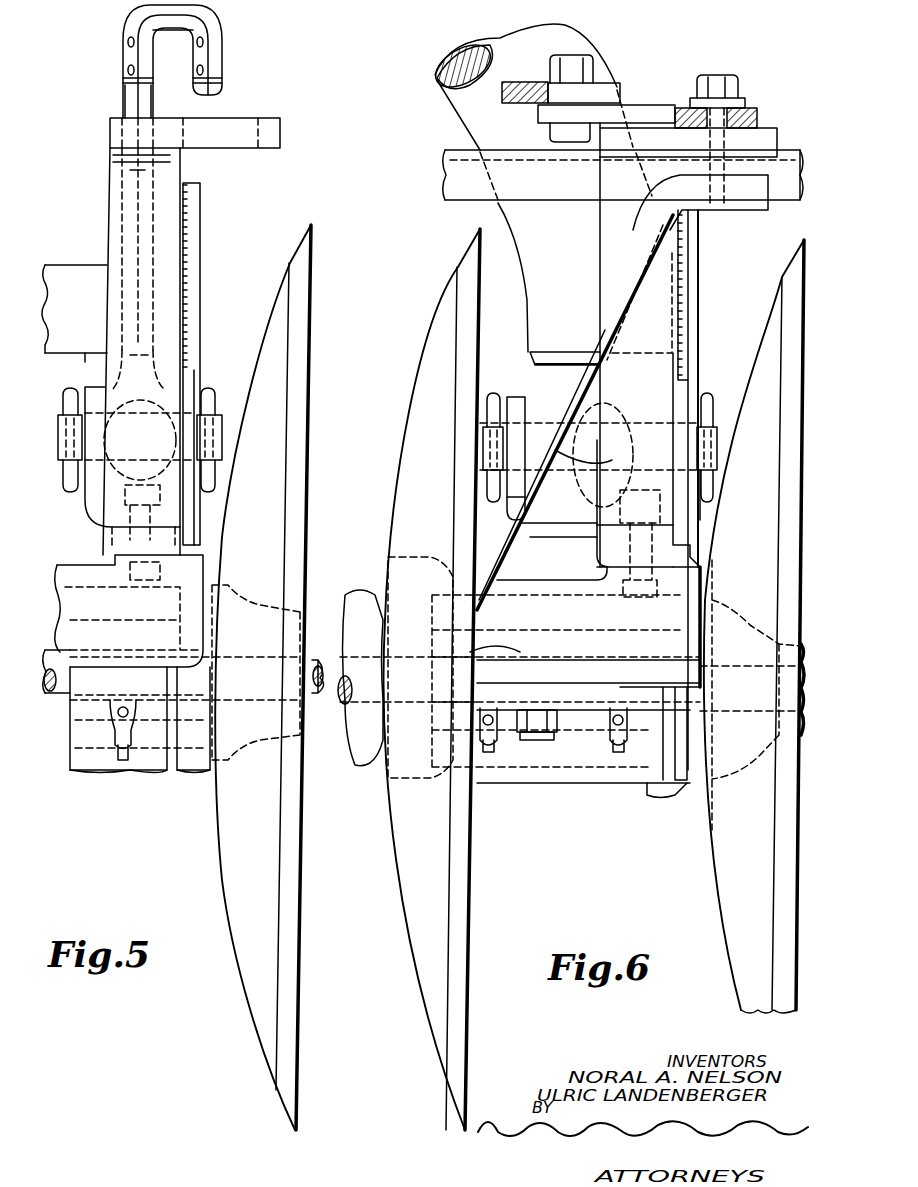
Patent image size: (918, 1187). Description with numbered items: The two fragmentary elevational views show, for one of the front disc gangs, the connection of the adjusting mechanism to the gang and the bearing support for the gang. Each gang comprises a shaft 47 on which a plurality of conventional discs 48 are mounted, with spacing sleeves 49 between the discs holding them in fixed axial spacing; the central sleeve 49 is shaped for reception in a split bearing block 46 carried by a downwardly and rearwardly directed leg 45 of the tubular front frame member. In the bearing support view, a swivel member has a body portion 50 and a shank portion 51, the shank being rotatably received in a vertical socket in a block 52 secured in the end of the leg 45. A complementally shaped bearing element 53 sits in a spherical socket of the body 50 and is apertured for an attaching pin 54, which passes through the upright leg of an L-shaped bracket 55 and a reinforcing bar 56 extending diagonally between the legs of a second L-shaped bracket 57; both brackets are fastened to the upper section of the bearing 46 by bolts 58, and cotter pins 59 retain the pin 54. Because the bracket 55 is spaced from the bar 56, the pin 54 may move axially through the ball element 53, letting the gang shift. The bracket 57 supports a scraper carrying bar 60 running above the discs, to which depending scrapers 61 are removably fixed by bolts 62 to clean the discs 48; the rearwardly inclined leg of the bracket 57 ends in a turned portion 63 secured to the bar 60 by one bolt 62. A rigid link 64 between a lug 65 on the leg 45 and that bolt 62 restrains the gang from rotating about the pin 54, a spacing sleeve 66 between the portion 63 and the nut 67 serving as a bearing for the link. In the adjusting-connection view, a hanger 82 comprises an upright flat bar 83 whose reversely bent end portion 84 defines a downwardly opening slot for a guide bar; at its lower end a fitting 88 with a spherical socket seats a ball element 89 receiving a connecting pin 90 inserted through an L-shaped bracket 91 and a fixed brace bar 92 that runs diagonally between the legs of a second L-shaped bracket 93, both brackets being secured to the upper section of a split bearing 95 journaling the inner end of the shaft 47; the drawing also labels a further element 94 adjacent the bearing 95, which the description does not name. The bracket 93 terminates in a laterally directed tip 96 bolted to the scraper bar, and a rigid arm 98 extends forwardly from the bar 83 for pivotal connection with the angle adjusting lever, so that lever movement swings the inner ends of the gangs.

In FIG. 6, the leg 45 is at (463, 52).
In FIG. 6, the split bearing block 46 is at (580, 578).
In FIG. 5, the shaft 47 is at (56, 649).
In FIG. 6, the shaft 47 is at (348, 642).
In FIG. 5, the disc 48 is at (222, 872).
In FIG. 6, the disc 48 is at (470, 905).
In FIG. 5, the spacing sleeve 49 is at (187, 770).
In FIG. 6, the spacing sleeve 49 is at (360, 762).
In FIG. 6, the body portion of swivel member 50 is at (628, 402).
In FIG. 6, the shank portion of swivel member 51 is at (620, 362).
In FIG. 6, the block 52 is at (572, 352).
In FIG. 6, the bearing element 53 is at (595, 462).
In FIG. 6, the attaching pin 54 is at (538, 425).
In FIG. 6, the L-shaped bracket 55 is at (510, 497).
In FIG. 6, the reinforcing bar 56 is at (690, 395).
In FIG. 6, the second L-shaped bracket 57 is at (703, 500).
In FIG. 6, the bolt 58 is at (640, 552).
In FIG. 6, the cotter pin 59 is at (490, 398).
In FIG. 6, the scraper carrying bar 60 is at (782, 160).
In FIG. 6, the scraper 61 is at (507, 554).
In FIG. 6, the bolt 62 is at (712, 113).
In FIG. 6, the rearwardly and laterally turned portion 63 is at (768, 135).
In FIG. 6, the rigid link 64 is at (648, 105).
In FIG. 6, the lug 65 is at (610, 88).
In FIG. 6, the spacing sleeve 66 is at (745, 110).
In FIG. 6, the nut 67 is at (704, 75).
In FIG. 5, the hanger 82 is at (50, 258).
In FIG. 5, the bar 83 is at (123, 97).
In FIG. 5, the end portion 84 is at (222, 62).
In FIG. 5, the fitting 88 is at (155, 372).
In FIG. 5, the ball element 89 is at (176, 412).
In FIG. 5, the connecting pin 90 is at (222, 440).
In FIG. 5, the L-shaped bracket 91 is at (85, 500).
In FIG. 5, the brace bar 92 is at (200, 303).
In FIG. 5, the second L-shaped bracket 93 is at (165, 275).
In FIG. 5, the bolt 94 is at (162, 568).
In FIG. 5, the split bearing 95 is at (82, 575).
In FIG. 5, the laterally directed tip 96 is at (280, 145).
In FIG. 5, the rigid arm 98 is at (80, 366).